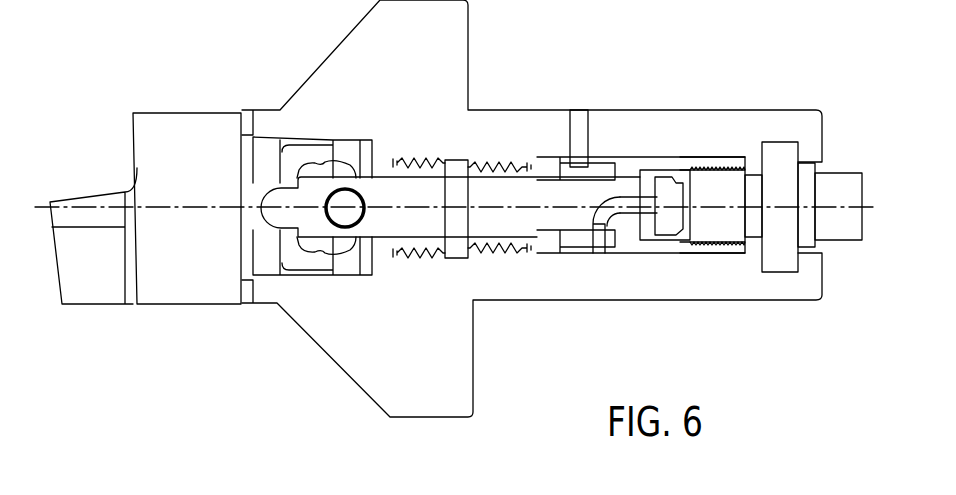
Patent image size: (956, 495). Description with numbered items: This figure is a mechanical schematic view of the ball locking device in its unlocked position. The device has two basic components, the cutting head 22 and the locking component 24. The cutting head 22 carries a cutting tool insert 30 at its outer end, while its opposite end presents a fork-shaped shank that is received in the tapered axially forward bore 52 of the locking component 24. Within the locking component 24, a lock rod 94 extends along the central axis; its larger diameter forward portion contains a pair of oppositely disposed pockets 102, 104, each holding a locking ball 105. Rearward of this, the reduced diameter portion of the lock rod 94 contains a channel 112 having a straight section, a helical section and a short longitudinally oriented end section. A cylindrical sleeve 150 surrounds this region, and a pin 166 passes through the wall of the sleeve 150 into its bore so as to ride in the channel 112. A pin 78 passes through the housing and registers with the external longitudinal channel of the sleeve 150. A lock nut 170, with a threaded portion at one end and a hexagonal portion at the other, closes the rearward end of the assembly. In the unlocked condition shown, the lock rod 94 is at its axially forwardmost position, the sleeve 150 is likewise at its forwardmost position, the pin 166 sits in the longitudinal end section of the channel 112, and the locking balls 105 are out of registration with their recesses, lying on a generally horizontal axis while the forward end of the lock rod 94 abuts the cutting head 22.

The cutting head 22 is at (200, 113).
The locking component 24 is at (822, 112).
The cutting tool insert 30 is at (112, 192).
The axially forward bore 52 is at (293, 275).
The pin 78 is at (582, 125).
The lock rod 94 is at (500, 192).
The pocket 102 is at (325, 165).
The pocket 104 is at (318, 247).
The locking ball 105 is at (345, 218).
The channel 112 is at (637, 212).
The cylindrical sleeve 150 is at (693, 162).
The pin 166 is at (590, 247).
The lock nut 170 is at (838, 236).